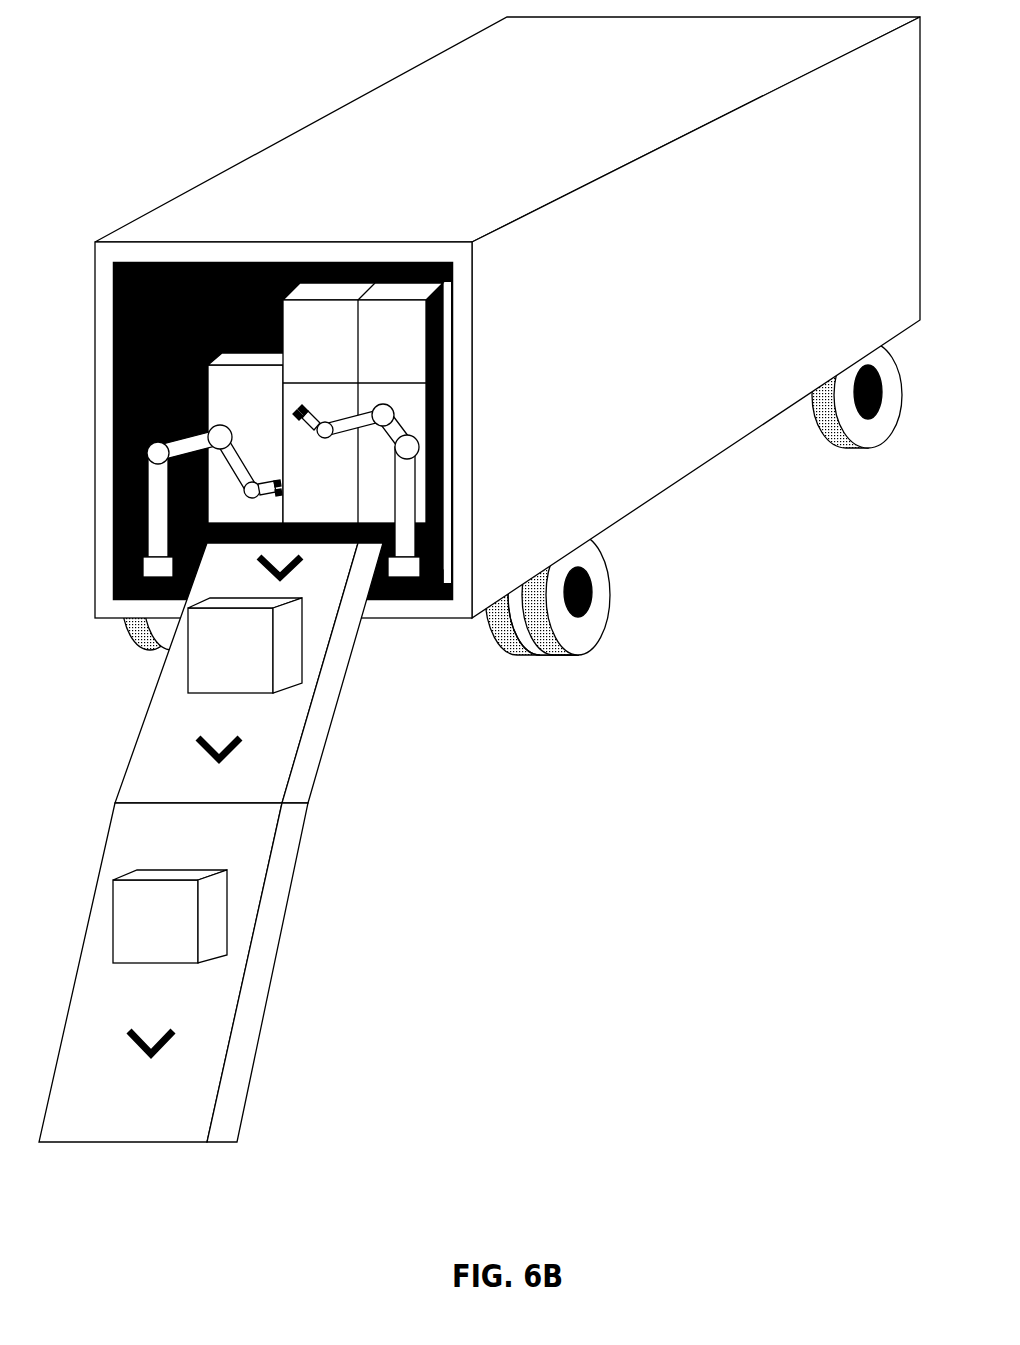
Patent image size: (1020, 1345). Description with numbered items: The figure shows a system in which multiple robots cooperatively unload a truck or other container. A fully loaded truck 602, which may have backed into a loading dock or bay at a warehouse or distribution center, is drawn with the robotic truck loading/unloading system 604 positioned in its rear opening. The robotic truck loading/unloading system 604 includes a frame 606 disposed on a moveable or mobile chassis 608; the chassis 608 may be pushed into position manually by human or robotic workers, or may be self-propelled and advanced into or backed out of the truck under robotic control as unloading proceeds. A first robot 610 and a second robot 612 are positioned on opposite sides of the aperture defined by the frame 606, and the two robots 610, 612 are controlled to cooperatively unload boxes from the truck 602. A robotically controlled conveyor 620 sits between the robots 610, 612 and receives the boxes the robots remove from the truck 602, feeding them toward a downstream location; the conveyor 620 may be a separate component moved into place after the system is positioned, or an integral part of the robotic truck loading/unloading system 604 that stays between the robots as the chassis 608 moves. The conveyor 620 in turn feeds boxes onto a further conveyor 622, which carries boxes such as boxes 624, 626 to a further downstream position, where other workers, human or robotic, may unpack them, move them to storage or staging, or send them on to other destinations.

The truck 602 is at (354, 110).
The robotic truck loading/unloading system 604 is at (86, 312).
The frame 606 is at (123, 358).
The chassis 608 is at (128, 600).
The first robot 610 is at (224, 430).
The second robot 612 is at (383, 404).
The conveyor 620 is at (317, 745).
The further conveyor 622 is at (268, 930).
The box 624 is at (207, 676).
The box 626 is at (162, 876).